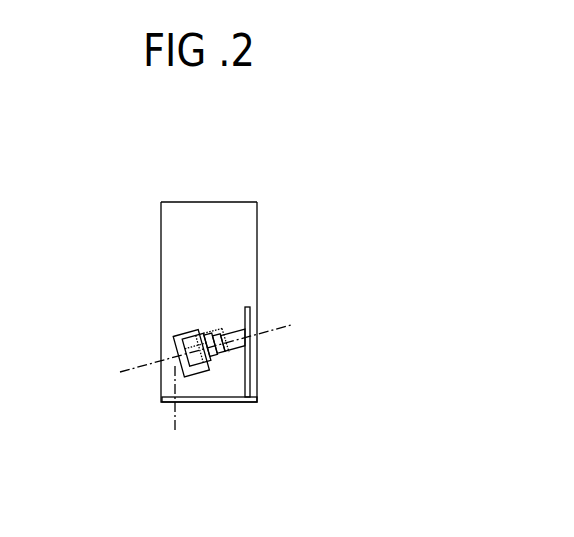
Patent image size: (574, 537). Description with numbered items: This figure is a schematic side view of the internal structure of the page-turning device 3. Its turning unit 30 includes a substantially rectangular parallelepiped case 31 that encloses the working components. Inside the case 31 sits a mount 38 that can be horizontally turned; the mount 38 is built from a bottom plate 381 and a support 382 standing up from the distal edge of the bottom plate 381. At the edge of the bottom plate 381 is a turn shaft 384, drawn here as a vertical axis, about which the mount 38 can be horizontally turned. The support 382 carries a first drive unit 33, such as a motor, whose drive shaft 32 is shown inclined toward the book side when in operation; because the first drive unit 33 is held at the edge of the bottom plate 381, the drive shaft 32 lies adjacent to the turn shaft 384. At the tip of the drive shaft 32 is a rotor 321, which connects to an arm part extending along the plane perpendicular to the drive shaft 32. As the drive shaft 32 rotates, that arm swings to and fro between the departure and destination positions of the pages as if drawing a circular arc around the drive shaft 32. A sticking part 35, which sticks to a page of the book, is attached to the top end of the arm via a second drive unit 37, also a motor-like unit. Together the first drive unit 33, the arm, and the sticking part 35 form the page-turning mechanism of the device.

The page-turning device 3 is at (199, 162).
The turning unit 30 is at (218, 200).
The case 31 is at (243, 202).
The drive shaft 32 is at (291, 325).
The first drive unit 33 is at (235, 331).
The sticking part 35 is at (173, 336).
The second drive unit 37 is at (212, 325).
The mount 38 is at (248, 306).
The bottom plate 381 is at (223, 400).
The support 382 is at (247, 373).
The turn shaft 384 is at (175, 420).
The rotor 321 is at (198, 368).